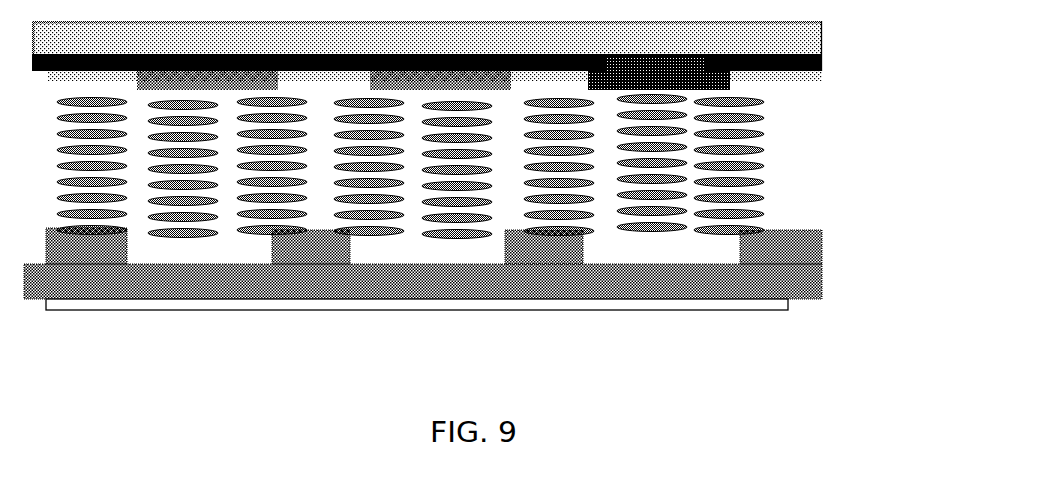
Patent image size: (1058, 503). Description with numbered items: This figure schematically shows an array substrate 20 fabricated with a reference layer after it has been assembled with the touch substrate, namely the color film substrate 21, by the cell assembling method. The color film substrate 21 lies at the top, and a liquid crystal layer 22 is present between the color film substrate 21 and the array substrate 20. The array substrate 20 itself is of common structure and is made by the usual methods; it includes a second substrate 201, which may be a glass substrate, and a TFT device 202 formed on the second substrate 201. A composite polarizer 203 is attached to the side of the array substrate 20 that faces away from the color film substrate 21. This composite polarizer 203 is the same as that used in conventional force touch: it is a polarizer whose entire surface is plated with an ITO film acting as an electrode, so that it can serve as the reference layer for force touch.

The array substrate 20 is at (471, 310).
The color film substrate 21 is at (836, 21).
The liquid crystal layer 22 is at (790, 100).
The second substrate 201 is at (690, 282).
The TFT device 202 is at (782, 250).
The composite polarizer 203 is at (390, 303).